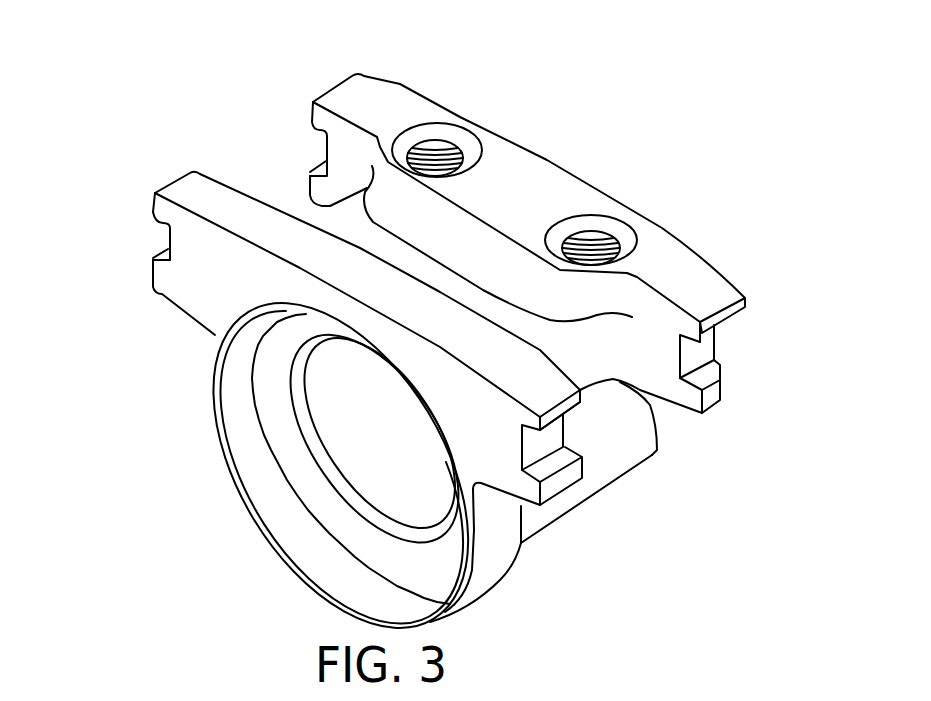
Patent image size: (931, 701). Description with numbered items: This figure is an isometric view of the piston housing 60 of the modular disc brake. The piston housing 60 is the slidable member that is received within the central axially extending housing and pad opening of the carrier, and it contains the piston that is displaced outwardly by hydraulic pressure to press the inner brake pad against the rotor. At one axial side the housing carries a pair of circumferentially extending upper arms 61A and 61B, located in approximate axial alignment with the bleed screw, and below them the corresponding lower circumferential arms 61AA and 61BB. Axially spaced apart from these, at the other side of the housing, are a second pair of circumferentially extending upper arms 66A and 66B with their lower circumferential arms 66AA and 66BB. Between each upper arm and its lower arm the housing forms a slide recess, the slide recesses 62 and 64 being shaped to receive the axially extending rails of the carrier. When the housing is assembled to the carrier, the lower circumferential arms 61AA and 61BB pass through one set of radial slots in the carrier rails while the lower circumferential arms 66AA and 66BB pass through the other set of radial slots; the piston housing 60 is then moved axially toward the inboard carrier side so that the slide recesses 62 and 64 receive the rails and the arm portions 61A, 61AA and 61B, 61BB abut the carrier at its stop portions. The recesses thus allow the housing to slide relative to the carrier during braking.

The piston housing 60 is at (548, 157).
The upper arm 61A is at (330, 90).
The lower circumferential arm 61AA is at (308, 179).
The slide recess 62 is at (326, 146).
The upper arm 61B is at (746, 298).
The lower circumferential arm 61BB is at (712, 395).
The slide recess 64 is at (704, 347).
The upper arm 66A is at (163, 190).
The lower circumferential arm 66AA is at (153, 282).
The upper arm 66B is at (574, 405).
The lower circumferential arm 66BB is at (567, 485).